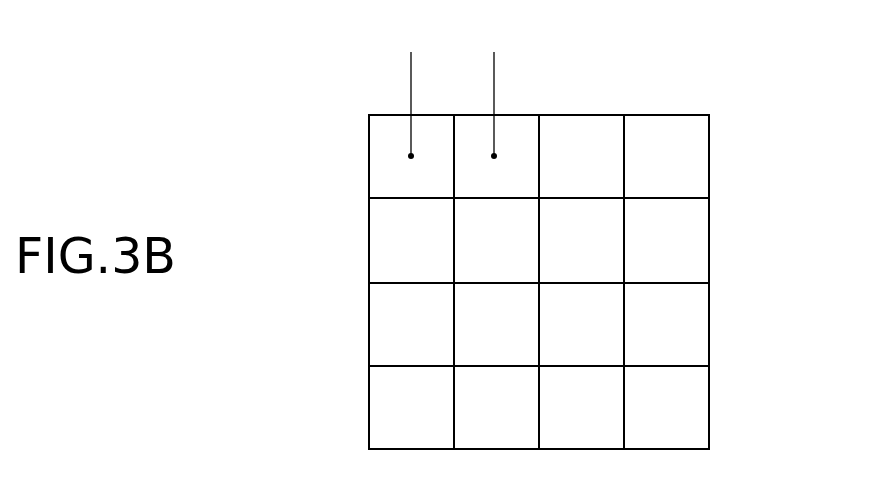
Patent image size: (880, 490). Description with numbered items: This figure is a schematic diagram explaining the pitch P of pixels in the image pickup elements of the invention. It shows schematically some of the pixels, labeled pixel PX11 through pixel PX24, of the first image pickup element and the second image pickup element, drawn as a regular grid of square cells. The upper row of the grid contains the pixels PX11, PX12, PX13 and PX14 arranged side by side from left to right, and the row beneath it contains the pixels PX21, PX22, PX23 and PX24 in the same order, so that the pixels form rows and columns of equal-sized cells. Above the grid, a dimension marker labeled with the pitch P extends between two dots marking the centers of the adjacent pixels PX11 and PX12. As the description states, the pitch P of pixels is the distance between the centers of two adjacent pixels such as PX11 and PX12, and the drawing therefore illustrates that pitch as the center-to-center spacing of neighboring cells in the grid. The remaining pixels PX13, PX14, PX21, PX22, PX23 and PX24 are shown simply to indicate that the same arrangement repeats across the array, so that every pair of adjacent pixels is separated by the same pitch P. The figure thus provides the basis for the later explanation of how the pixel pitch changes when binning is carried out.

The pitch of pixels P is at (494, 66).
The pixel PX11 is at (387, 143).
The pixel PX12 is at (504, 130).
The pixel PX13 is at (579, 130).
The pixel PX14 is at (667, 130).
The pixel PX21 is at (387, 242).
The pixel PX22 is at (480, 243).
The pixel PX23 is at (595, 243).
The pixel PX24 is at (690, 242).